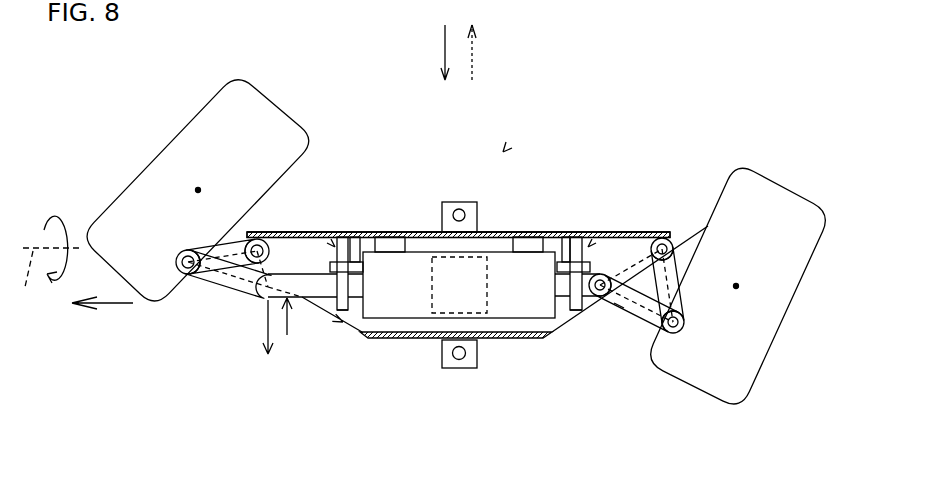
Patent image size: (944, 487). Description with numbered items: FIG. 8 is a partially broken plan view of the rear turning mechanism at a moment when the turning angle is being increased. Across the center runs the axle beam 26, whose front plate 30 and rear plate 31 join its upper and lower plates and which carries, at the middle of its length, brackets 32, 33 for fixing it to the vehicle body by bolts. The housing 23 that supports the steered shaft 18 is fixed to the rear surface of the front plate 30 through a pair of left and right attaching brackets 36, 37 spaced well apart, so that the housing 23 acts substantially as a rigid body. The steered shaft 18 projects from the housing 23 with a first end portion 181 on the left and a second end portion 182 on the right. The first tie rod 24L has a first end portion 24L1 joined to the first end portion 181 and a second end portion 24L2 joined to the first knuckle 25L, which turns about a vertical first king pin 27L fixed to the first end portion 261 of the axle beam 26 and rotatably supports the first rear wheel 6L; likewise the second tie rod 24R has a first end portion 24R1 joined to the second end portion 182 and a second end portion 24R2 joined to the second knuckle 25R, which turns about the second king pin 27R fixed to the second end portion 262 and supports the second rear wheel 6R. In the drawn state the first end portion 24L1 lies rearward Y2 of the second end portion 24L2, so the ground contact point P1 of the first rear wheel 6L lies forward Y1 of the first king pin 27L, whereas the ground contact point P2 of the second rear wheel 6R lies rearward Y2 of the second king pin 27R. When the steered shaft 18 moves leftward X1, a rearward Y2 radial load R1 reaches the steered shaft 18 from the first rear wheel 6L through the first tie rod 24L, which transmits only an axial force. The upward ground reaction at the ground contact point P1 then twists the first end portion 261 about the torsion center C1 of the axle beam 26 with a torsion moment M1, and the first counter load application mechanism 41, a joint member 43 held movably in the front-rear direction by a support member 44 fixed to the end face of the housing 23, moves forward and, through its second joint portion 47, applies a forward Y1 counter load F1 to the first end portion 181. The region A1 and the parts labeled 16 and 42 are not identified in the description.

The first rear wheel 6L is at (218, 125).
The second rear wheel 6R is at (794, 200).
The ground contact point of the first rear wheel P1 is at (198, 190).
The ground contact point of the second rear wheel P2 is at (736, 286).
The first knuckle 25L is at (207, 245).
The second knuckle 25R is at (686, 312).
The first king pin 27L is at (249, 236).
The second king pin 27R is at (675, 233).
The first tie rod 24L is at (225, 288).
The first end portion of the first tie rod 24L1 is at (197, 275).
The second end portion of the first tie rod 24L2 is at (247, 293).
The second tie rod 24R is at (632, 306).
The first end portion of the second tie rod 24R1 is at (655, 328).
The second end portion of the second tie rod 24R2 is at (670, 232).
The axle beam 26 is at (505, 228).
The first end portion of the axle beam 261 is at (272, 231).
The second end portion of the axle beam 262 is at (625, 231).
The front plate 30 is at (423, 231).
The rear plate 31 is at (381, 340).
The bracket 32 is at (385, 248).
The bracket 33 is at (528, 248).
The attaching bracket 36 is at (461, 202).
The attaching bracket 37 is at (466, 370).
The housing 23 is at (507, 320).
The drive unit 16 is at (431, 318).
The first counter load application mechanism 41 is at (335, 247).
The right support 42 is at (588, 247).
The joint member 43 is at (330, 272).
The support member 44 is at (352, 237).
The second joint portion 47 is at (343, 311).
The steered shaft 18 is at (428, 333).
The first end portion of the steered shaft 181 is at (300, 231).
The second end portion of the steered shaft 182 is at (620, 307).
The counter load F1 is at (343, 347).
The radial load R1 is at (255, 300).
The steering unit region A1 is at (503, 152).
The leftward direction X1 is at (113, 303).
The forward direction Y1 is at (475, 50).
The rearward direction Y2 is at (443, 50).
The torsion moment M1 is at (55, 217).
The torsion center C1 is at (43, 281).